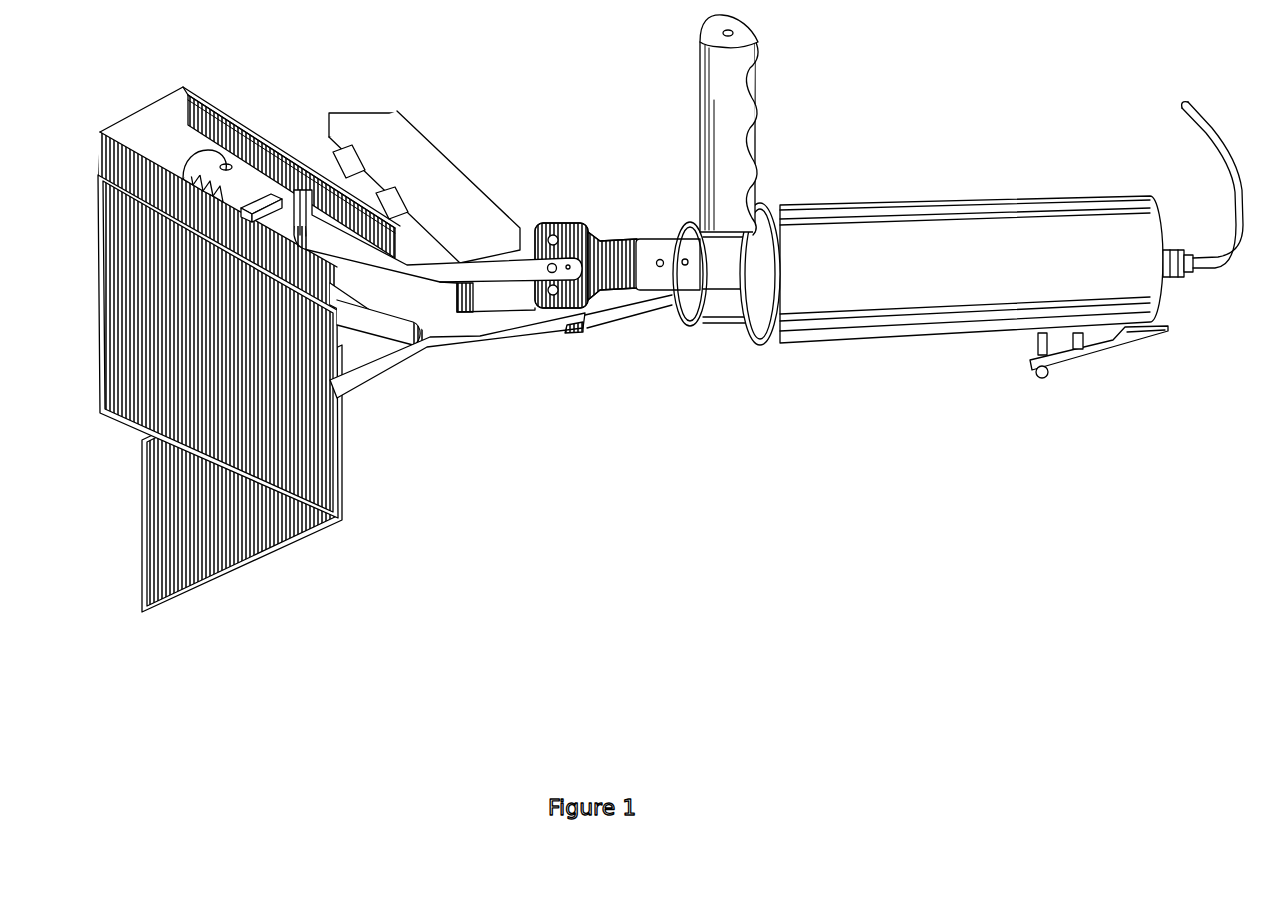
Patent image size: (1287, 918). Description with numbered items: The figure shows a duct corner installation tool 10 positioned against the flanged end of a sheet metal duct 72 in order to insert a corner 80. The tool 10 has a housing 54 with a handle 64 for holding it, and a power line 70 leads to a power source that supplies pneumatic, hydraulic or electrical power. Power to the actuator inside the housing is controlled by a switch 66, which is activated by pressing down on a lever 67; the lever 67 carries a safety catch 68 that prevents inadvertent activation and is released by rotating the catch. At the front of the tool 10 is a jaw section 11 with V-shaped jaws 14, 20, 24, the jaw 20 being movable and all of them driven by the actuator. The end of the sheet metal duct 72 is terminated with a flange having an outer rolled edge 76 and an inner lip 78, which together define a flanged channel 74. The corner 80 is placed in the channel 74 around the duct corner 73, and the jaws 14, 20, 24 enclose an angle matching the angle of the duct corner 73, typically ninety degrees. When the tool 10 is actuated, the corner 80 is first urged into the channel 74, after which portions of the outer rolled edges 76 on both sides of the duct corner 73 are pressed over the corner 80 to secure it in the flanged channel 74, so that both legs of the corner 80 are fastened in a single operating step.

The duct corner installation tool 10 is at (918, 267).
The jaw section 11 is at (315, 187).
The jaw 14 is at (267, 200).
The movable jaw 20 is at (470, 185).
The jaw 24 is at (412, 360).
The housing 54 is at (845, 340).
The handle 64 is at (700, 108).
The switch 66 is at (1090, 350).
The lever 67 is at (1157, 345).
The safety catch 68 is at (1035, 380).
The power line 70 is at (1220, 148).
The sheet metal duct 72 is at (125, 420).
The duct corner 73 is at (322, 525).
The flanged channel 74 is at (167, 110).
The outer rolled edge 76 is at (232, 140).
The lip 78 is at (150, 162).
The corner 80 is at (200, 160).